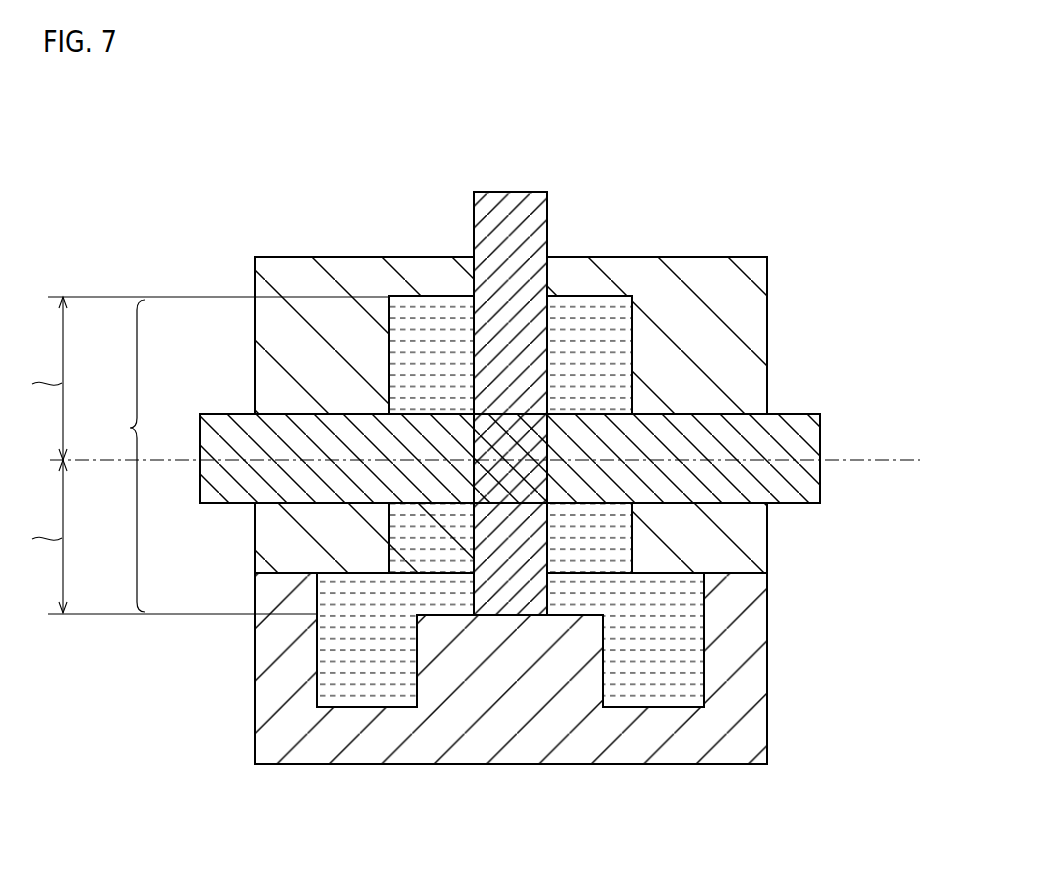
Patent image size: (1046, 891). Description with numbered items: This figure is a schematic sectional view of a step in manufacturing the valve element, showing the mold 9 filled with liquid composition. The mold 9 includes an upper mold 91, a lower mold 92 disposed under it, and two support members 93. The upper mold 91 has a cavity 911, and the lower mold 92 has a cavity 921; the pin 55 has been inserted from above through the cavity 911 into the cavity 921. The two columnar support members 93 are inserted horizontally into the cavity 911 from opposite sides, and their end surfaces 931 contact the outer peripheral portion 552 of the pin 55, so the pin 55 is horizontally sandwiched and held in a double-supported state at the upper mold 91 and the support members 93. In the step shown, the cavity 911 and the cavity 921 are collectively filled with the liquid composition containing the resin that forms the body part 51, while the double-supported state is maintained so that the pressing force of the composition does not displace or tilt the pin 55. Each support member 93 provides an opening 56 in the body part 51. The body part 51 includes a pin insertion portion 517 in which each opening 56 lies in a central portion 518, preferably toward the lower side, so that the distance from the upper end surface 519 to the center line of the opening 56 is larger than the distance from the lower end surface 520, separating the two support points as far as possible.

The mold 9 is at (462, 500).
The upper mold 91 is at (727, 257).
The cavity 911 is at (605, 345).
The lower mold 92 is at (723, 772).
The cavity 921 is at (673, 645).
The support member 93 is at (236, 410).
The end surface 931 is at (485, 462).
The pin 55 is at (550, 209).
The outer peripheral portion 552 is at (547, 328).
The upper end surface 519 is at (438, 296).
The central portion 518 is at (428, 392).
The pin insertion portion 517 is at (116, 456).
The lower end surface 520 is at (455, 617).
The body part 51 is at (670, 598).
The opening 56 is at (875, 455).